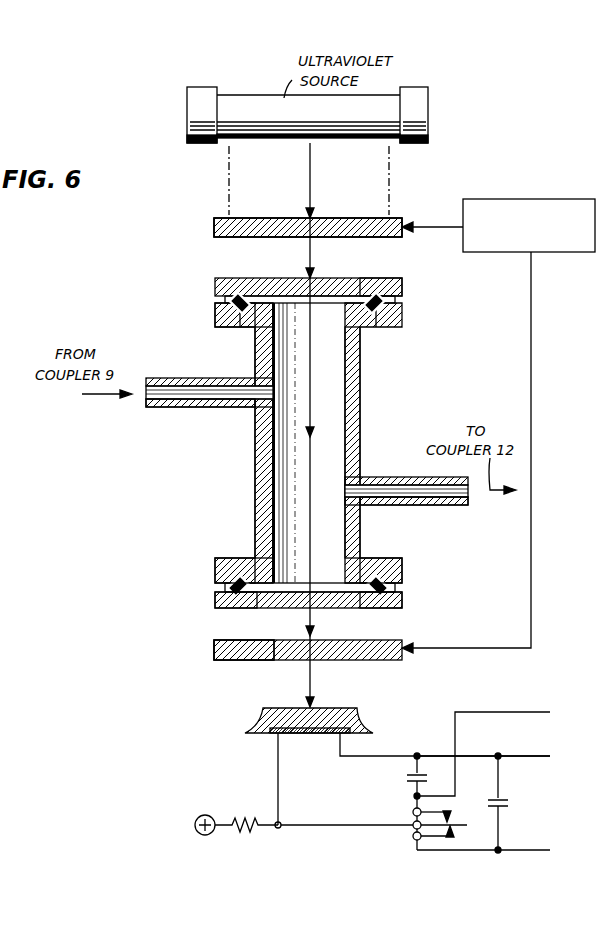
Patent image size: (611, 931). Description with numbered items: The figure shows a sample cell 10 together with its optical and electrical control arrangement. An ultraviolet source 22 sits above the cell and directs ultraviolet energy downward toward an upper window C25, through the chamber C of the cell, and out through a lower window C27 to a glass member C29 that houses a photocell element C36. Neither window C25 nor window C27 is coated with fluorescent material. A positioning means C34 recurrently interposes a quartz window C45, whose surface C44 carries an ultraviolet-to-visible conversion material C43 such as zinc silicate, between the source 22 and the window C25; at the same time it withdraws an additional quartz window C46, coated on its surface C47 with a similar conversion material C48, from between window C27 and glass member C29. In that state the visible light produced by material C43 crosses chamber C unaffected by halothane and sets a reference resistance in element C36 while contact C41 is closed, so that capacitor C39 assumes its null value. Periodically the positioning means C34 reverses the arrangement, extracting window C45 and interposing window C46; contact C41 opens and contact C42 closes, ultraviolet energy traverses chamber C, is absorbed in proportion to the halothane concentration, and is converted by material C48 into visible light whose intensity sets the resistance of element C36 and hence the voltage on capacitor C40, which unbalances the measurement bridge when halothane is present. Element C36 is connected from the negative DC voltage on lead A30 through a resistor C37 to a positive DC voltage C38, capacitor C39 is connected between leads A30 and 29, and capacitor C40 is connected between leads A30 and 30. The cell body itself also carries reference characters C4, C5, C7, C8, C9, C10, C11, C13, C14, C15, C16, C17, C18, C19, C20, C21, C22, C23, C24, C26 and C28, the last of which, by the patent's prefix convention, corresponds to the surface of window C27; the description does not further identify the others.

The ultraviolet source 22 is at (246, 93).
The sample cell 10 is at (386, 380).
The chamber C is at (302, 443).
The positioning means C34 is at (520, 199).
The ultraviolet to visible light conversion material C43 is at (400, 218).
The surface C44 is at (214, 231).
The window C45 is at (222, 236).
The window C25 is at (336, 278).
The upper end plate edge C26 is at (402, 280).
The seal rings C19 is at (245, 278).
The left upper window C15 is at (225, 302).
The right upper window C16 is at (385, 303).
The left upper flange C11 is at (215, 319).
The left upper bore C17 is at (238, 327).
The right upper bore C18 is at (375, 327).
The inlet tube C8 is at (189, 378).
The inlet tube wall C7 is at (189, 407).
The right cell wall C5 is at (360, 405).
The left cell wall C4 is at (255, 483).
The outlet tube C9 is at (379, 477).
The outlet tube bore C10 is at (385, 500).
The left lower bore C22 is at (238, 570).
The right lower bore C24 is at (373, 585).
The left lower flange C13 is at (215, 576).
The right lower flange C14 is at (402, 565).
The left lower seal C20 is at (230, 589).
The right lower seal C21 is at (402, 590).
The lower end plate C23 is at (402, 596).
The window C27 is at (402, 604).
The surface C28 is at (226, 608).
The window C46 is at (214, 652).
The surface C47 is at (250, 660).
The ultraviolet to visible light conversion material C48 is at (234, 646).
The glass member C29 is at (262, 718).
The photocell element C36 is at (270, 734).
The positive DC voltage C38 is at (195, 825).
The resistor C37 is at (240, 830).
The capacitor C40 is at (406, 778).
The contact C42 is at (450, 810).
The contact C41 is at (452, 830).
The capacitor C39 is at (511, 803).
The lead 30 is at (538, 712).
The lead A30 is at (533, 756).
The lead 29 is at (535, 850).